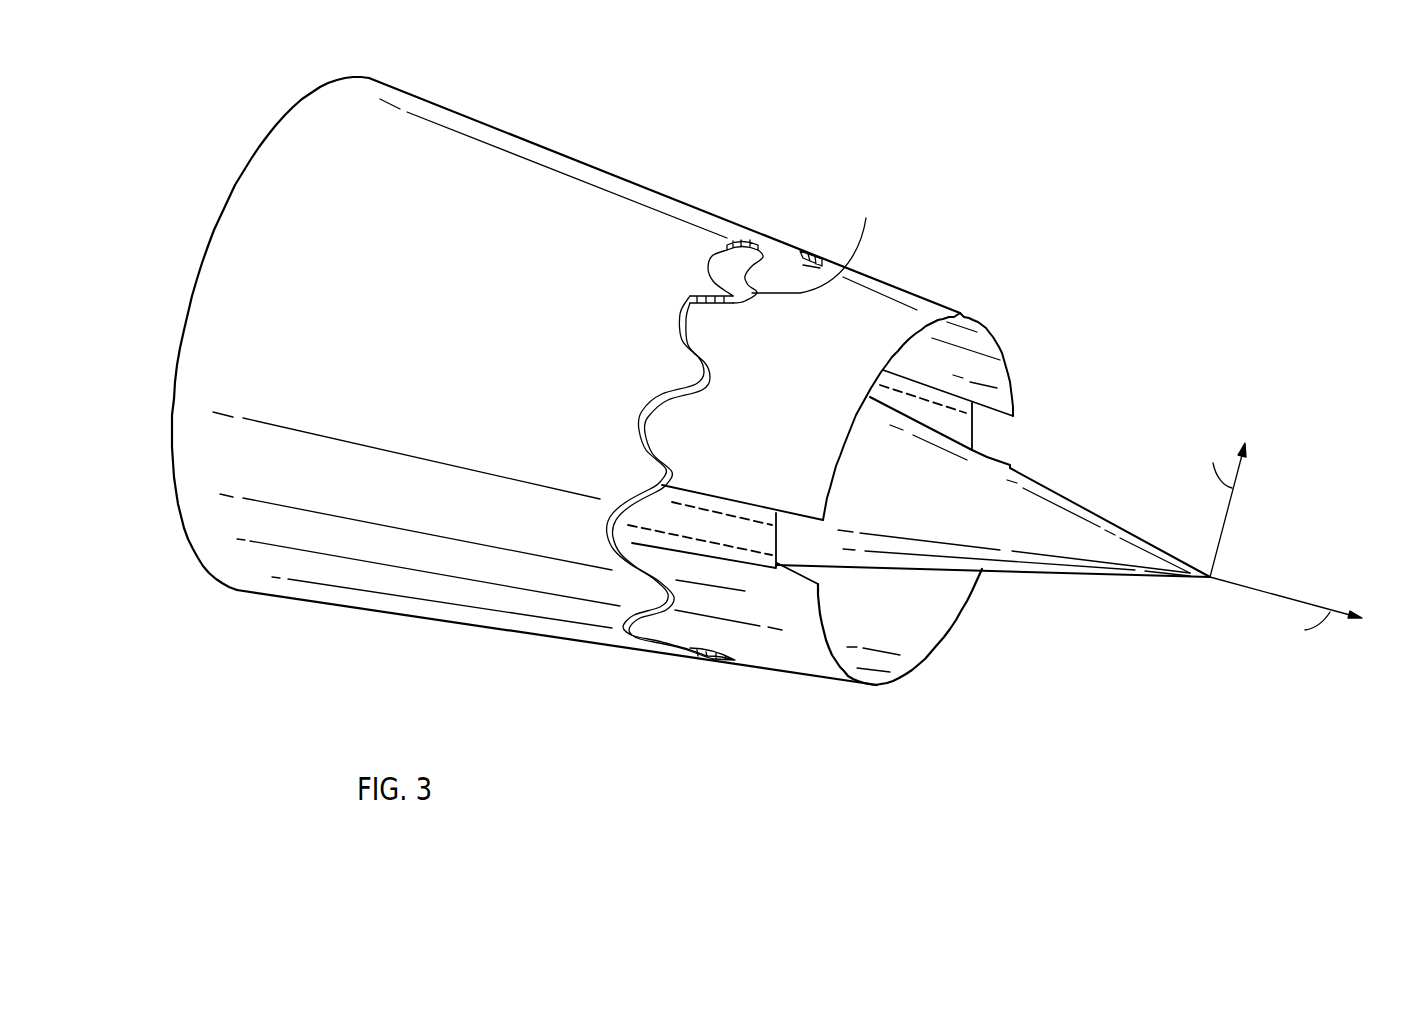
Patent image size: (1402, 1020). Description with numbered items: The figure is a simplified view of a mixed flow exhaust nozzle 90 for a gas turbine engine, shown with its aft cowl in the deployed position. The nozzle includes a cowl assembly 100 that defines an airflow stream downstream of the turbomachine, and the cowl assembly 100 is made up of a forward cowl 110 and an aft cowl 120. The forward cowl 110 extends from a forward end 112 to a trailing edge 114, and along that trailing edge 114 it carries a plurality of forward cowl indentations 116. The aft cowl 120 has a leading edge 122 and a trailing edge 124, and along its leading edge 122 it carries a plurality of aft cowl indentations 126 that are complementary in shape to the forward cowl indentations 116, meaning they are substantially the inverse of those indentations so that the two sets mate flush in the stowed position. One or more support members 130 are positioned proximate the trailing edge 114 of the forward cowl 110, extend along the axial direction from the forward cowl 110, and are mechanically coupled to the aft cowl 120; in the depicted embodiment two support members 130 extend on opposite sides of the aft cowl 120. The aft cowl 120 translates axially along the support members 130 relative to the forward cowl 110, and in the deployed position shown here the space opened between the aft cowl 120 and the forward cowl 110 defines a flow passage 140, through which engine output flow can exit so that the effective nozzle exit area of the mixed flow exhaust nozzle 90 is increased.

The mixed flow exhaust nozzle 90 is at (700, 406).
The cowl assembly 100 is at (767, 406).
The forward cowl 110 is at (566, 376).
The forward end 112 is at (243, 178).
The trailing edge 114 is at (712, 250).
The forward cowl indentations 116 is at (668, 318).
The aft cowl 120 is at (869, 456).
The leading edge 122 is at (668, 645).
The trailing edge 124 is at (1010, 362).
The aft cowl indentations 126 is at (710, 378).
The support members 130 is at (742, 549).
The flow passage 140 is at (818, 241).